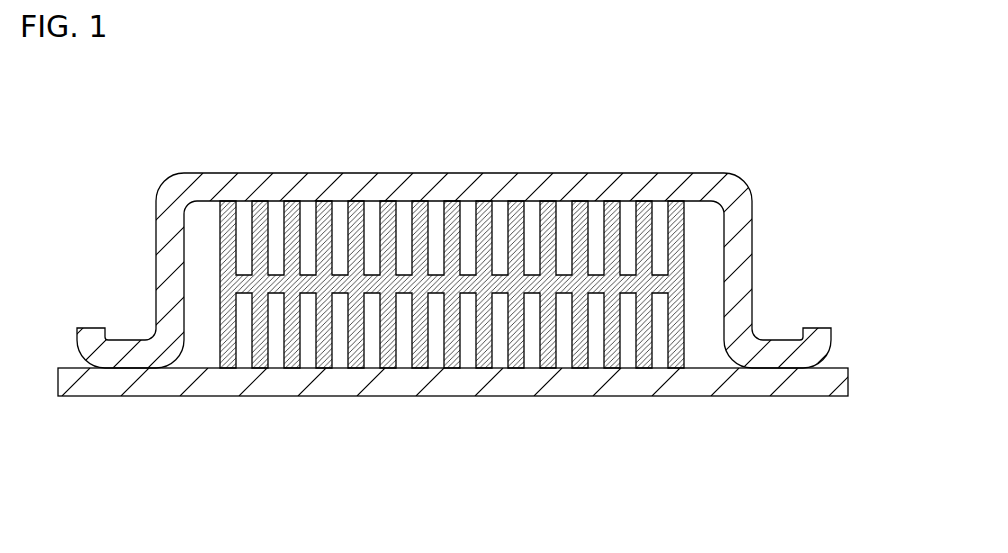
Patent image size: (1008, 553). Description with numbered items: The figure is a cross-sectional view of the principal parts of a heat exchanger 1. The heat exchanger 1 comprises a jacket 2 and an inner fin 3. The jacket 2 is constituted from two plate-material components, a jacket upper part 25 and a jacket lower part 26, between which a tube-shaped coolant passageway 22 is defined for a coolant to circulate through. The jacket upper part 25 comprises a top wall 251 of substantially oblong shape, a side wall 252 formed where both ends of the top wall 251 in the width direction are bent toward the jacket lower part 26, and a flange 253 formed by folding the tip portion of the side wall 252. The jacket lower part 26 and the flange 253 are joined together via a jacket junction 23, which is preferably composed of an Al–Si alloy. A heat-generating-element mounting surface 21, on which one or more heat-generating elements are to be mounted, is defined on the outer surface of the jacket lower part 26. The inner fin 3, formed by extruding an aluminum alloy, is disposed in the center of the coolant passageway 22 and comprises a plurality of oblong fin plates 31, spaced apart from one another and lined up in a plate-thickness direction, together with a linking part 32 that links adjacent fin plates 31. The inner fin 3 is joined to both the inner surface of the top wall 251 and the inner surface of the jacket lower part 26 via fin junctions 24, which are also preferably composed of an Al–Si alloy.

The heat exchanger 1 is at (654, 92).
The jacket 2 is at (739, 177).
The inner fin 3 is at (678, 248).
The heat-generating-element mounting surface 21 is at (607, 398).
The coolant passageway 22 is at (705, 223).
The jacket junction 23 is at (123, 370).
The fin junction 24 is at (517, 202).
The jacket upper part 25 is at (302, 187).
The jacket lower part 26 is at (333, 383).
The fin plate 31 is at (421, 357).
The linking part 32 is at (437, 285).
The top wall 251 is at (412, 188).
The side wall 252 is at (168, 221).
The flange 253 is at (137, 345).